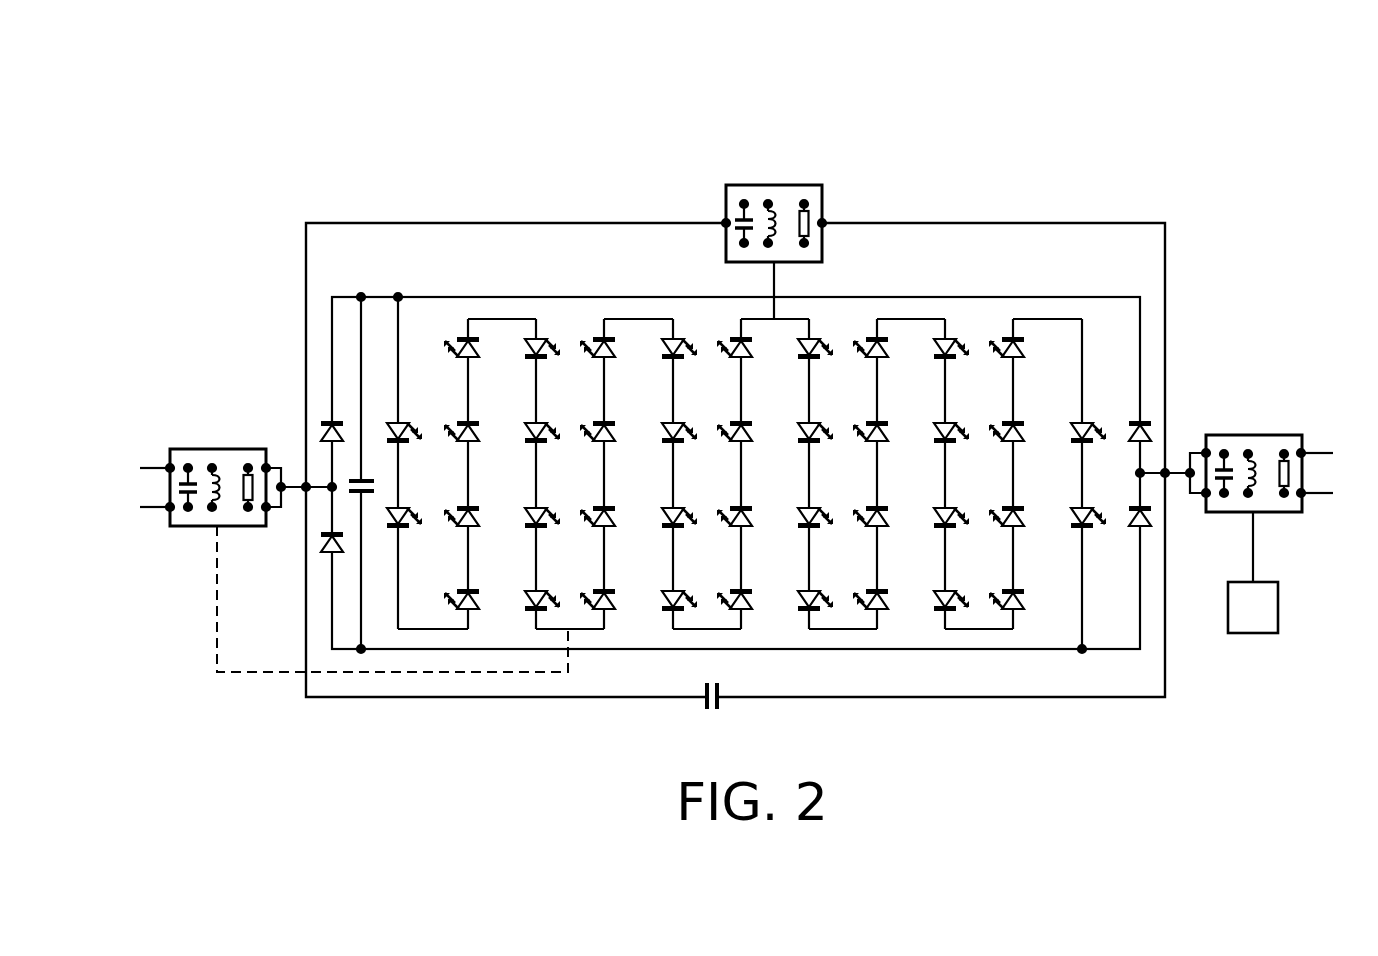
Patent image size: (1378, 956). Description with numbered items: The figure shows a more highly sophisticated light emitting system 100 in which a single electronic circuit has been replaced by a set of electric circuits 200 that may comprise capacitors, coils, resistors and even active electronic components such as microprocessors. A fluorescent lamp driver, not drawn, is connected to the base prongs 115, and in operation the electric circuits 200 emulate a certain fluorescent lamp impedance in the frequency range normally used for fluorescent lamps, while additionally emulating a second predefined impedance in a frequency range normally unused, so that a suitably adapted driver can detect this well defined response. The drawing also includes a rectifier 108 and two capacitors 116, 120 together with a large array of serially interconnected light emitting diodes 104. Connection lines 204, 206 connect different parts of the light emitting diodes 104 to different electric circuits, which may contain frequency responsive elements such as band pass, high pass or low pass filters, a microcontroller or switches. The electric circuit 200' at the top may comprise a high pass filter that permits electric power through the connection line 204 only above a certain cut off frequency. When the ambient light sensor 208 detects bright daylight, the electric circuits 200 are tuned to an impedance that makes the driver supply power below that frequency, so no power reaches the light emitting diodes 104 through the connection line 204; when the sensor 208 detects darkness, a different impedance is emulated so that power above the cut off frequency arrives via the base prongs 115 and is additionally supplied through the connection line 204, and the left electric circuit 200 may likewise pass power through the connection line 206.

The light emitting system 100 is at (1003, 146).
The light emitting diode 104 is at (463, 336).
The rectifier 108 is at (327, 420).
The base prongs 115 is at (140, 468).
The capacitor 116 is at (720, 683).
The capacitor 120 is at (342, 500).
The electric circuit 200 is at (736, 448).
The electric circuit 200' is at (774, 189).
The connection line 204 is at (774, 289).
The connection line 206 is at (263, 674).
The sensor 208 is at (1278, 606).